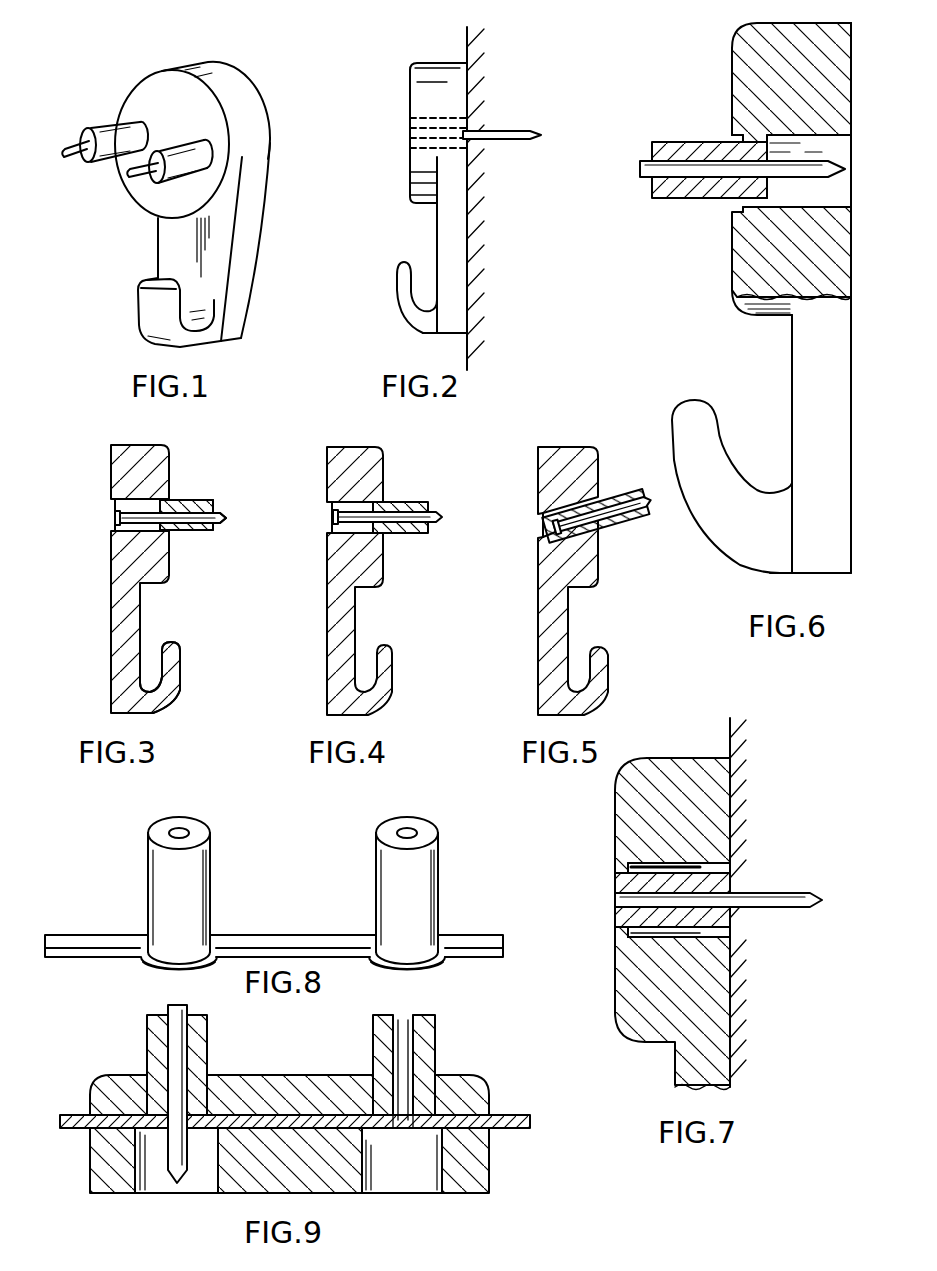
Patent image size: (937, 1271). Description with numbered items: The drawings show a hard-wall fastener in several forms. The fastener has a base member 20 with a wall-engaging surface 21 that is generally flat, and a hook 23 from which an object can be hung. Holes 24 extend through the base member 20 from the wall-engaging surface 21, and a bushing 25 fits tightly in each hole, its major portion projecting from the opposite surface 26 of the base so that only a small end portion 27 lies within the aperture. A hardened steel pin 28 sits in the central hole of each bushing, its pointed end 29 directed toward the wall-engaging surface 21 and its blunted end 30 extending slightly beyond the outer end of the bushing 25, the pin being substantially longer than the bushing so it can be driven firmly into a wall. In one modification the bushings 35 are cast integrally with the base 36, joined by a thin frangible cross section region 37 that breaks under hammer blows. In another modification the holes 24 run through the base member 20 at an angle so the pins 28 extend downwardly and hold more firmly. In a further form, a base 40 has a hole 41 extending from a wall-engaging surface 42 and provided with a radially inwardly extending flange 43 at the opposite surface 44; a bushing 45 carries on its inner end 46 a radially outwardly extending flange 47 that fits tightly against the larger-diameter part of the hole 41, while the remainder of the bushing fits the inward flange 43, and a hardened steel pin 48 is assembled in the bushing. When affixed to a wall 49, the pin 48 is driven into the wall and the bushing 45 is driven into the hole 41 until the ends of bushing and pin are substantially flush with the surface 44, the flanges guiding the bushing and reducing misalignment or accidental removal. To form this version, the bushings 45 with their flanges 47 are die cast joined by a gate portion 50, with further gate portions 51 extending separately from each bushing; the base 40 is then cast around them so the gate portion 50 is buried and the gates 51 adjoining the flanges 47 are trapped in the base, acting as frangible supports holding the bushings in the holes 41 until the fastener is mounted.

In FIG. 1, the base member 20 is at (208, 80).
In FIG. 2, the base member 20 is at (437, 63).
In FIG. 3, the base member 20 is at (156, 561).
In FIG. 5, the base member 20 is at (568, 555).
In FIG. 3, the wall-engaging surface 21 is at (111, 462).
In FIG. 5, the wall-engaging surface 21 is at (538, 493).
In FIG. 1, the hook 23 is at (140, 337).
In FIG. 2, the hook 23 is at (400, 287).
In FIG. 3, the hook 23 is at (180, 667).
In FIG. 3, the holes 24 is at (113, 507).
In FIG. 5, the holes 24 is at (543, 525).
In FIG. 1, the bushing 25 is at (110, 127).
In FIG. 2, the bushing 25 is at (433, 121).
In FIG. 3, the bushing 25 is at (207, 499).
In FIG. 3, the surface of the base opposite the wall-engaging surface 26 is at (171, 557).
In FIG. 3, the end portion of the bushing 27 is at (165, 537).
In FIG. 1, the hardened steel pin 28 is at (126, 174).
In FIG. 2, the hardened steel pin 28 is at (503, 130).
In FIG. 3, the hardened steel pin 28 is at (173, 462).
In FIG. 5, the hardened steel pin 28 is at (547, 540).
In FIG. 3, the pointed end of the pin 29 is at (113, 524).
In FIG. 3, the blunted end of the pin 30 is at (228, 516).
In FIG. 4, the bushing 35 is at (413, 502).
In FIG. 4, the base 36 is at (347, 447).
In FIG. 4, the frangible cross section region 37 is at (380, 500).
In FIG. 6, the base 40 is at (757, 27).
In FIG. 7, the base 40 is at (638, 1033).
In FIG. 9, the base 40 is at (482, 1157).
In FIG. 6, the hole 41 is at (850, 148).
In FIG. 7, the hole 41 is at (687, 860).
In FIG. 9, the hole 41 is at (137, 1167).
In FIG. 6, the wall-engaging surface 42 is at (853, 90).
In FIG. 6, the radially inwardly extending flange 43 is at (743, 122).
In FIG. 7, the radially inwardly extending flange 43 is at (623, 933).
In FIG. 6, the surface opposite the wall-engaging surface 44 is at (730, 70).
In FIG. 7, the surface opposite the wall-engaging surface 44 is at (613, 970).
In FIG. 6, the bushing 45 is at (680, 193).
In FIG. 7, the bushing 45 is at (613, 882).
In FIG. 8, the bushing 45 is at (212, 853).
In FIG. 9, the bushing 45 is at (210, 1058).
In FIG. 6, the end of the bushing 46 is at (770, 190).
In FIG. 6, the radially outwardly extending flange 47 is at (743, 207).
In FIG. 7, the radially outwardly extending flange 47 is at (732, 935).
In FIG. 8, the radially outwardly extending flange 47 is at (148, 968).
In FIG. 6, the hardened steel pin 48 is at (640, 168).
In FIG. 7, the hardened steel pin 48 is at (787, 892).
In FIG. 9, the hardened steel pin 48 is at (190, 1007).
In FIG. 7, the wall 49 is at (720, 727).
In FIG. 8, the gate portion 50 is at (303, 940).
In FIG. 9, the gate portion 50 is at (270, 1090).
In FIG. 8, the gate portions 51 is at (90, 940).
In FIG. 9, the gate portions 51 is at (77, 1117).